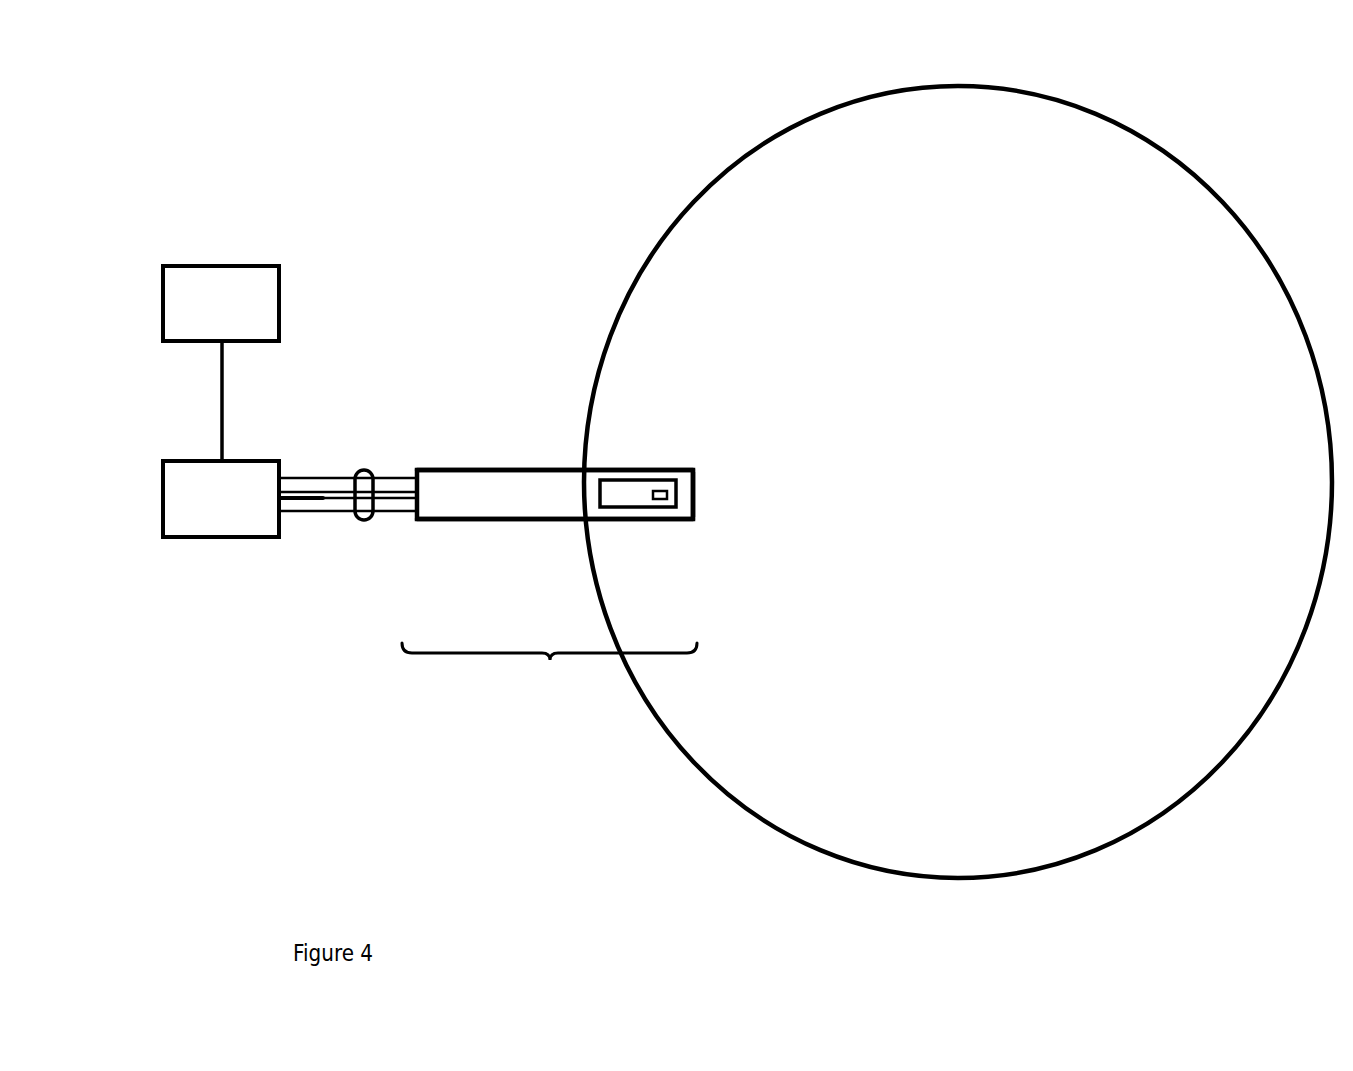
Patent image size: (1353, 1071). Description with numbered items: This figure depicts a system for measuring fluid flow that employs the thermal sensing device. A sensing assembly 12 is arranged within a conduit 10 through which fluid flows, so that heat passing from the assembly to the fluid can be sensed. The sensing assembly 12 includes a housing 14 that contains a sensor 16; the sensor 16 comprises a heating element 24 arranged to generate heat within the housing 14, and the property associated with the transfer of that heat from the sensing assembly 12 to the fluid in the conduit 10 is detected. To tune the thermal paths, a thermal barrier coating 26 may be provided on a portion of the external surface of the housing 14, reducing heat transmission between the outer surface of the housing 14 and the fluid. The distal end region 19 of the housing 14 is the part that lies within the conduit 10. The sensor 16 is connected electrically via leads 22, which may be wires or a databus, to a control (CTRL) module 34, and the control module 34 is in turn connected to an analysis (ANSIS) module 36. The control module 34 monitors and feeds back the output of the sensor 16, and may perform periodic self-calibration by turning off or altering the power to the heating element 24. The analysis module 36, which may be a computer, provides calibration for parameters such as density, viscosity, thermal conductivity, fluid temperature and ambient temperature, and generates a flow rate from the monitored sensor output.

The conduit 10 is at (1236, 195).
The sensing assembly 12 is at (550, 667).
The housing 14 is at (452, 468).
The sensor 16 is at (660, 508).
The distal end 19 is at (695, 485).
The leads 22 is at (364, 520).
The heating element 24 is at (628, 489).
The thermal barrier coating 26 is at (570, 467).
The control module 34 is at (162, 528).
The analysis module 36 is at (162, 334).